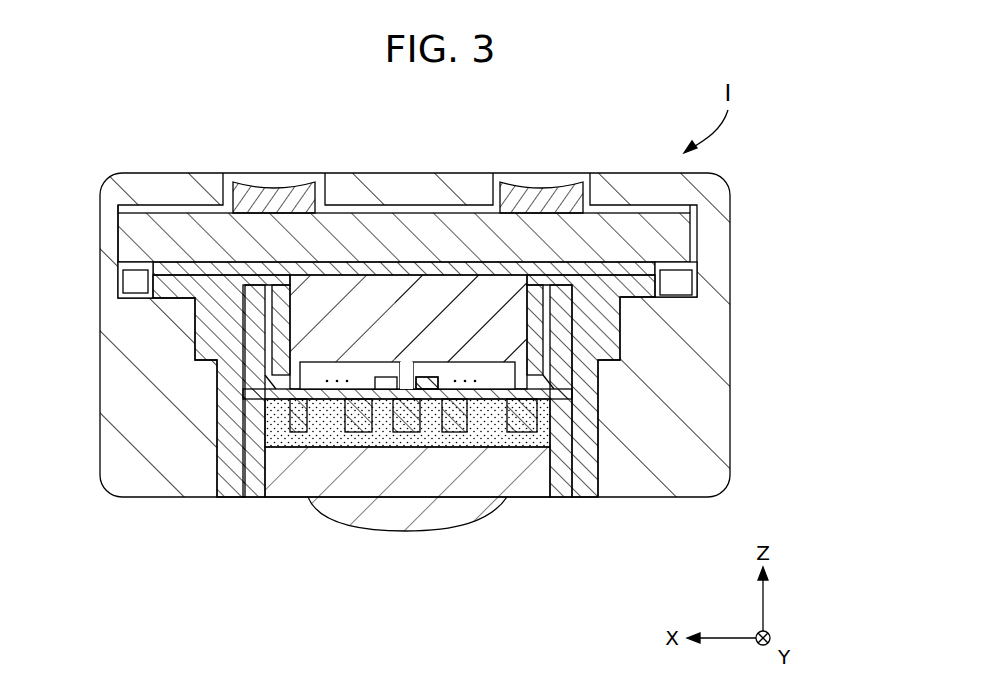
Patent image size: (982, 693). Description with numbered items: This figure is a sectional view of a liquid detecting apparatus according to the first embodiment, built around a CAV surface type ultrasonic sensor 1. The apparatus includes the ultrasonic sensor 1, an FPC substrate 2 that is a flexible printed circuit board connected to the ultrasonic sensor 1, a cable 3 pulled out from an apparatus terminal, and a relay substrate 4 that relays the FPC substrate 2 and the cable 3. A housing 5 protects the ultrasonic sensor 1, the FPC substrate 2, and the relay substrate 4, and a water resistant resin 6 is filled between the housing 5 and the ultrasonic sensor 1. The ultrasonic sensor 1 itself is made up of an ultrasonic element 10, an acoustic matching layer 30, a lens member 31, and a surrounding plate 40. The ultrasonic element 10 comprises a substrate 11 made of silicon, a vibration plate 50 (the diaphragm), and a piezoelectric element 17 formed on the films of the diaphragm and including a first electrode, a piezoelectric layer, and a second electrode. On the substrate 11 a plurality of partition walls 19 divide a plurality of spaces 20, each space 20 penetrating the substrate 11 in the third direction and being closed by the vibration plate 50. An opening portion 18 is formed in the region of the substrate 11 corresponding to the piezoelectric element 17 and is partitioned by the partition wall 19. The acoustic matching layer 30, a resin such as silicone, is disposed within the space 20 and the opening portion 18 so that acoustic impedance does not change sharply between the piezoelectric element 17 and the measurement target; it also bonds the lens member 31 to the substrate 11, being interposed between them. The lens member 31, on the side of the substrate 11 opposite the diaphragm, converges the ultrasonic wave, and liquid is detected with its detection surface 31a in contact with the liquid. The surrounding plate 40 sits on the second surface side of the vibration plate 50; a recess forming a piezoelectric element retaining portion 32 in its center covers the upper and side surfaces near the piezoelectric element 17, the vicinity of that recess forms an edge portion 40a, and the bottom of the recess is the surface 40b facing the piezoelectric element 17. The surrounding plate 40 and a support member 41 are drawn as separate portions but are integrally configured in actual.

The ultrasonic sensor 1 is at (527, 511).
The FPC substrate 2 is at (663, 268).
The cable 3 is at (583, 190).
The relay substrate 4 is at (663, 237).
The housing 5 is at (712, 381).
The water resistant resin 6 is at (590, 336).
The ultrasonic element 10 is at (307, 588).
The substrate 11 is at (449, 385).
The piezoelectric element 17 is at (490, 432).
The opening portion 18 is at (452, 420).
The partition wall 19 is at (449, 385).
The space 20 is at (379, 427).
The acoustic matching layer 30 is at (565, 440).
The lens member 31 is at (512, 503).
The detection surface 31a is at (318, 503).
The piezoelectric element retaining portion 32 is at (367, 377).
The surrounding plate 40 is at (544, 251).
The edge portion 40a is at (505, 356).
The surface 40b is at (442, 367).
The support member 41 is at (406, 385).
The vibration plate 50 is at (341, 393).